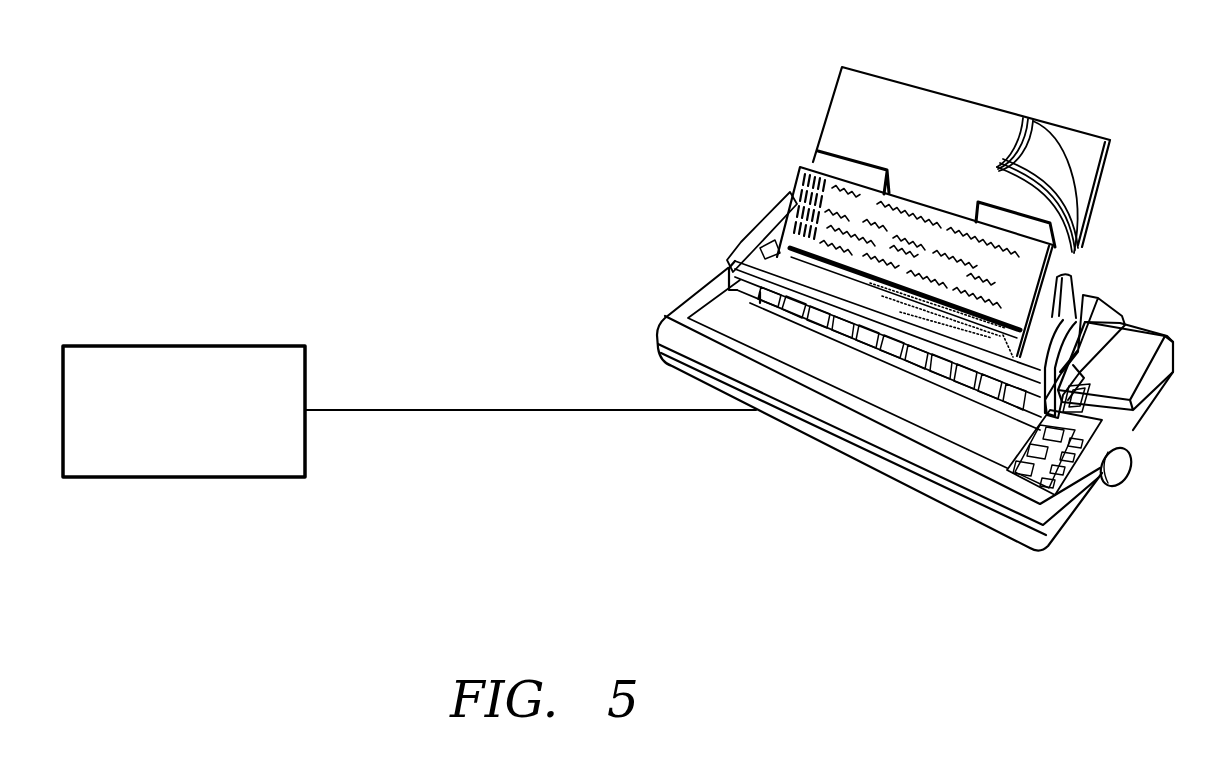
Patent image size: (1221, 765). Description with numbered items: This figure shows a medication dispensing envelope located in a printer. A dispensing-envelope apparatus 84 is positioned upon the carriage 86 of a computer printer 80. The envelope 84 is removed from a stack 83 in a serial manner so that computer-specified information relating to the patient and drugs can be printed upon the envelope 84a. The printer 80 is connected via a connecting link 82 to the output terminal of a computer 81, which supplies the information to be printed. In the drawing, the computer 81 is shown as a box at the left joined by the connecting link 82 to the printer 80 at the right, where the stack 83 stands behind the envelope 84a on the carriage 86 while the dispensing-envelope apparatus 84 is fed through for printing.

The computer printer 80 is at (937, 457).
The computer 81 is at (192, 344).
The connecting link 82 is at (488, 409).
The stack 83 is at (1079, 152).
The dispensing-envelope apparatus 84 is at (1000, 163).
The envelope 84a is at (797, 172).
The carriage 86 is at (1102, 323).